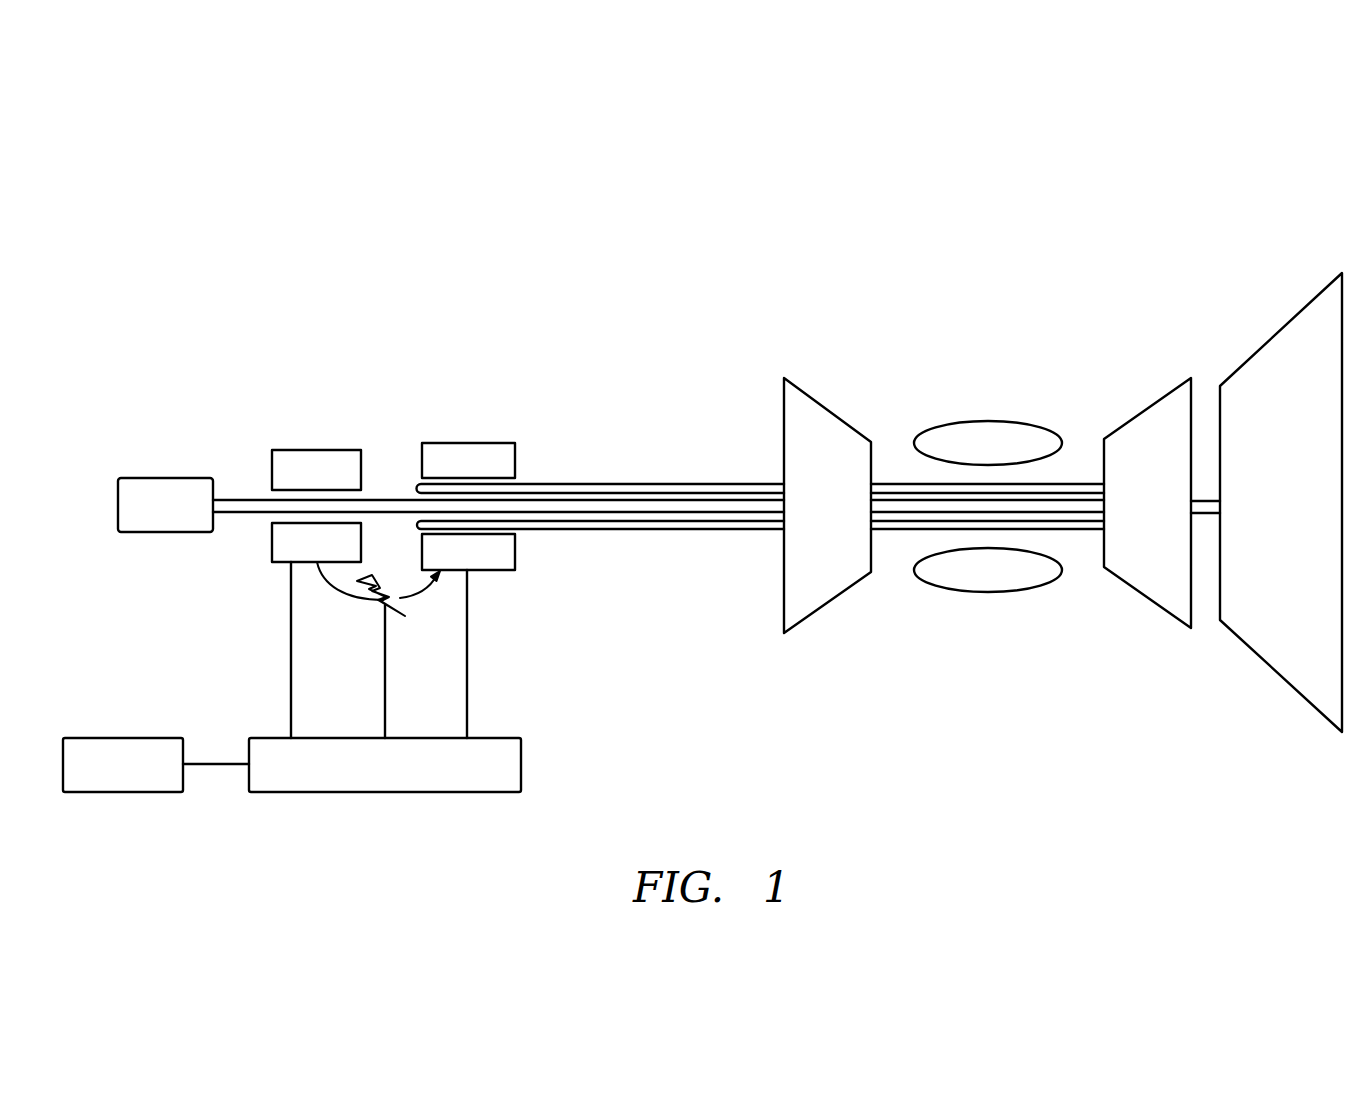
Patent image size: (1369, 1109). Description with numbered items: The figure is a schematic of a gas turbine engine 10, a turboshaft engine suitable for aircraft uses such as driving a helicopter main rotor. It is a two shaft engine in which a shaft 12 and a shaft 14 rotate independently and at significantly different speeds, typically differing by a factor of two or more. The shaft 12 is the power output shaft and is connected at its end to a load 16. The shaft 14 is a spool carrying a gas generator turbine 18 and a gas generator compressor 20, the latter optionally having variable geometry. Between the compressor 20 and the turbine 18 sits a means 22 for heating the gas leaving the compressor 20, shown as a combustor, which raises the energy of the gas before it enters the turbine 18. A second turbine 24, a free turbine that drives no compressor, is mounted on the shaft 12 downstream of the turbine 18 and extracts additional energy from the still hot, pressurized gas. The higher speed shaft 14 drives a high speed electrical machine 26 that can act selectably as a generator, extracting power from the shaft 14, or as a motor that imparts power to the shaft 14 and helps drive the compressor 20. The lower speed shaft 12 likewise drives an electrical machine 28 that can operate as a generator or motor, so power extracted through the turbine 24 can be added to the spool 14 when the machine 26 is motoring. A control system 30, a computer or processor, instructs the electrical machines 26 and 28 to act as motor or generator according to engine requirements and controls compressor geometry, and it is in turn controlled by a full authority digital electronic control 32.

The gas turbine engine 10 is at (708, 280).
The shaft 12 is at (235, 499).
The shaft 14 is at (1086, 483).
The load 16 is at (167, 478).
The gas generator turbine 18 is at (1140, 412).
The gas generator compressor 20 is at (830, 410).
The means for heating the gas 22 is at (988, 422).
The second turbine 24 is at (1262, 343).
The high speed electrical machine 26 is at (466, 443).
The electrical machine 28 is at (320, 450).
The control system 30 is at (521, 762).
The full authority digital electronic control (FADEC) 32 is at (123, 738).